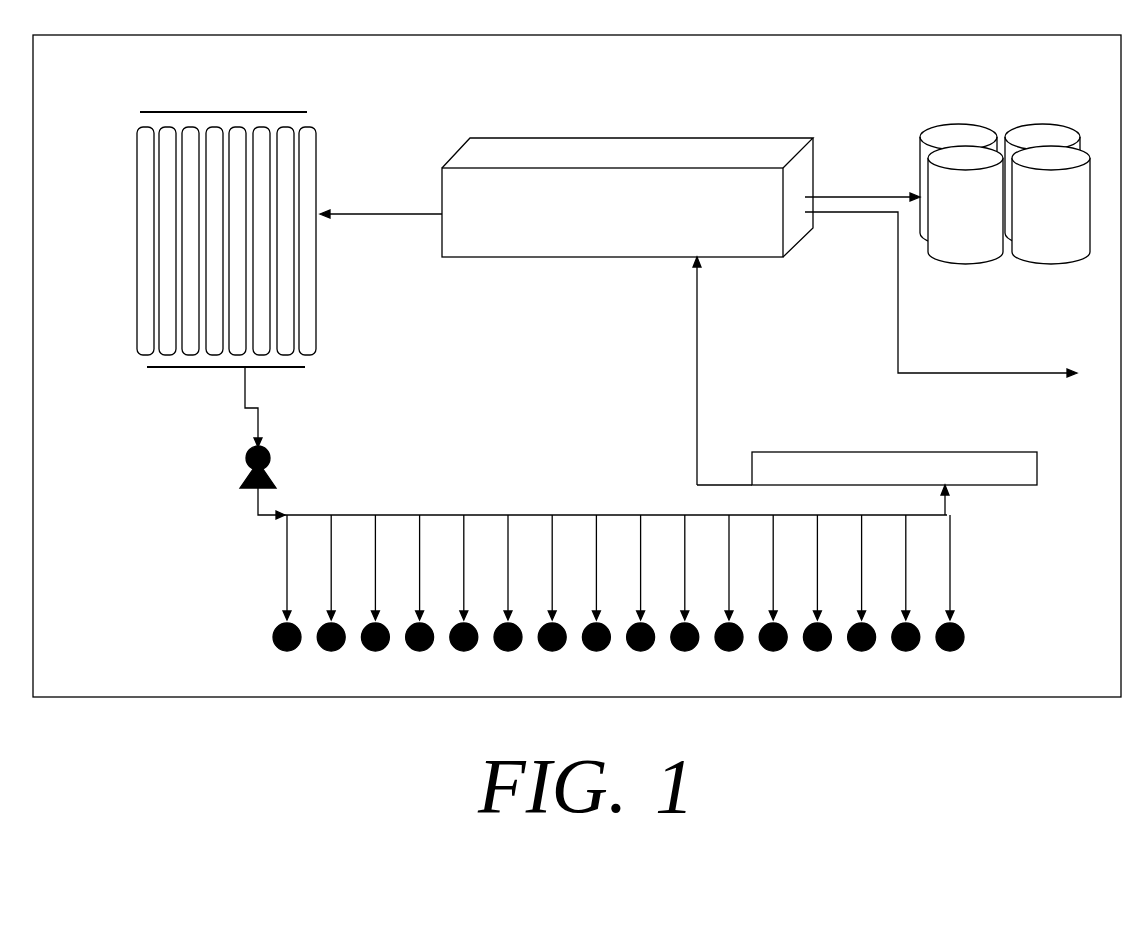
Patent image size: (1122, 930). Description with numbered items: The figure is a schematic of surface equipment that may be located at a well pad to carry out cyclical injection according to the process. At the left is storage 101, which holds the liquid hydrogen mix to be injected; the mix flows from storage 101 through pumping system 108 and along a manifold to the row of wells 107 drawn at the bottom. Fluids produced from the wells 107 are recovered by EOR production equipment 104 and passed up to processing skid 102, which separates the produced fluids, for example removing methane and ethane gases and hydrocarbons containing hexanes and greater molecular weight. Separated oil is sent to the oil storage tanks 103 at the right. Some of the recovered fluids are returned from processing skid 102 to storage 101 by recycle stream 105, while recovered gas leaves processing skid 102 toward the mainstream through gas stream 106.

The storage 101 is at (235, 97).
The processing skid 102 is at (610, 128).
The oil storage tanks 103 is at (992, 113).
The EOR production equipment 104 is at (822, 450).
The recycle stream 105 is at (372, 205).
The gas stream 106 is at (985, 368).
The wells 107 is at (962, 625).
The pumping system 108 is at (272, 450).